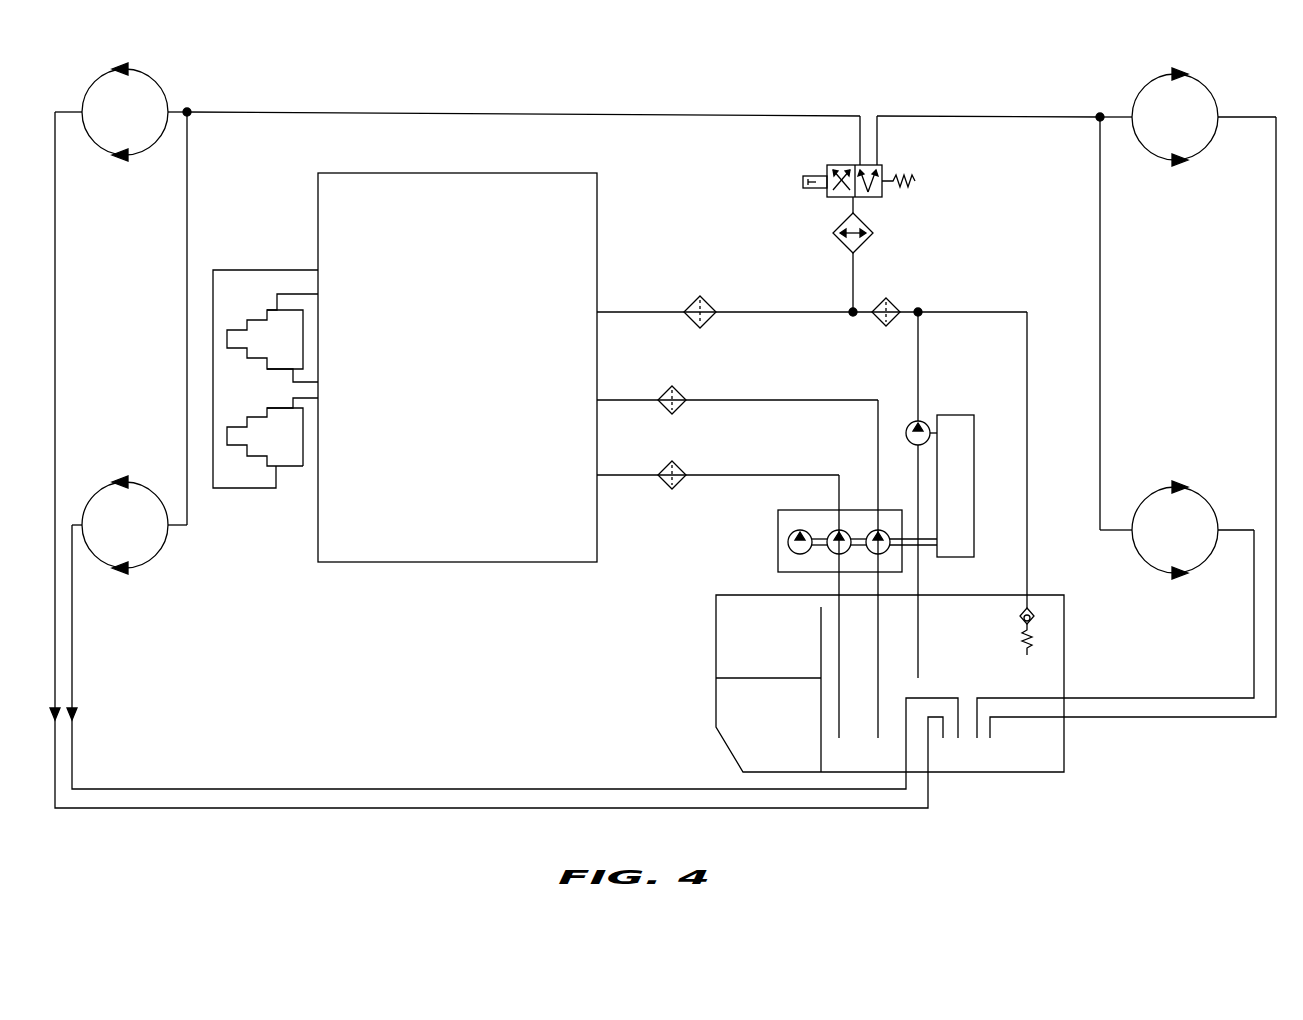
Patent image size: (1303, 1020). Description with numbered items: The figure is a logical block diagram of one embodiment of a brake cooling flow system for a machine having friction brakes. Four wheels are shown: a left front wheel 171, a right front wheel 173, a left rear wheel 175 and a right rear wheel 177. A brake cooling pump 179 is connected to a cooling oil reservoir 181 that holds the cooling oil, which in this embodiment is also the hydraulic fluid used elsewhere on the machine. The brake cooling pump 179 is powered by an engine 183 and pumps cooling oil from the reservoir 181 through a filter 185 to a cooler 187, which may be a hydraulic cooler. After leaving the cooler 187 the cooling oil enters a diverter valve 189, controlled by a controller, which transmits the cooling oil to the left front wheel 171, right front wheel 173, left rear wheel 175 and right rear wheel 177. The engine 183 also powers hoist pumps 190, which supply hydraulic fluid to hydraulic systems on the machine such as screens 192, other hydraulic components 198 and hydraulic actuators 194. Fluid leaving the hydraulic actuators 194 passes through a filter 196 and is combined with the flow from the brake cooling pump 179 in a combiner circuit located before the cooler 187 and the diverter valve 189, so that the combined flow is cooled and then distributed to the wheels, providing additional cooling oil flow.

The left front wheel 171 is at (158, 82).
The right front wheel 173 is at (158, 553).
The left rear wheel 175 is at (1198, 153).
The right rear wheel 177 is at (1202, 497).
The brake cooling pump 179 is at (926, 421).
The cooling oil reservoir 181 is at (1064, 635).
The engine 183 is at (972, 499).
The filter 185 is at (896, 302).
The cooler 187 is at (873, 228).
The diverter valve 189 is at (829, 165).
The hoist pumps 190 is at (860, 510).
The screens 192 is at (662, 392).
The hydraulic actuators 194 is at (300, 325).
The filter 196 is at (690, 302).
The other hydraulic components 198 is at (500, 562).